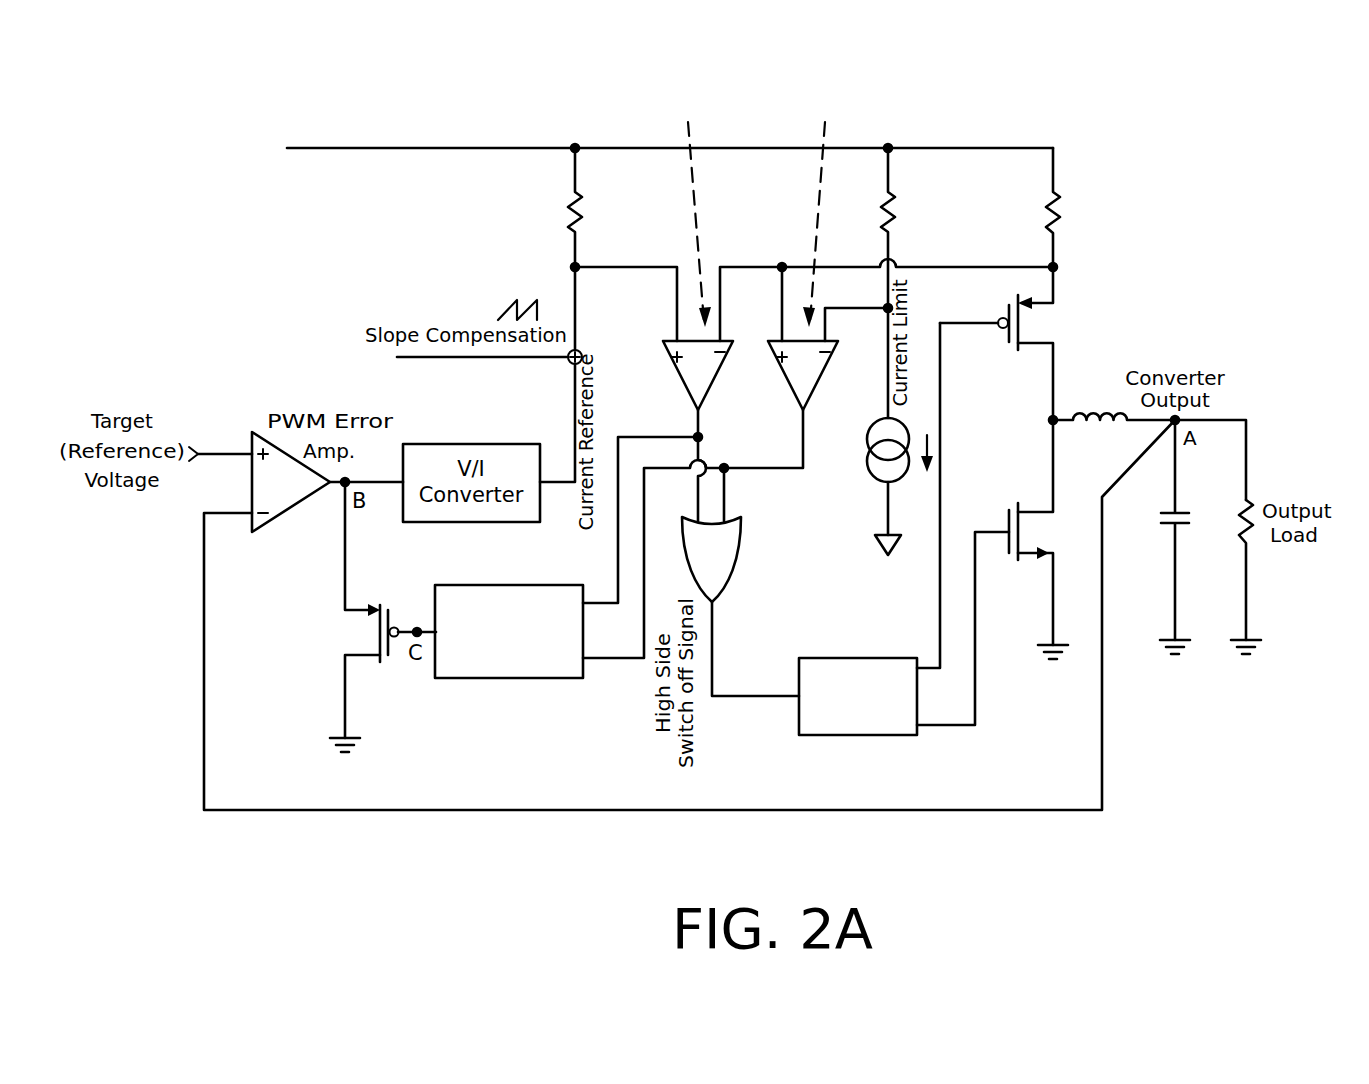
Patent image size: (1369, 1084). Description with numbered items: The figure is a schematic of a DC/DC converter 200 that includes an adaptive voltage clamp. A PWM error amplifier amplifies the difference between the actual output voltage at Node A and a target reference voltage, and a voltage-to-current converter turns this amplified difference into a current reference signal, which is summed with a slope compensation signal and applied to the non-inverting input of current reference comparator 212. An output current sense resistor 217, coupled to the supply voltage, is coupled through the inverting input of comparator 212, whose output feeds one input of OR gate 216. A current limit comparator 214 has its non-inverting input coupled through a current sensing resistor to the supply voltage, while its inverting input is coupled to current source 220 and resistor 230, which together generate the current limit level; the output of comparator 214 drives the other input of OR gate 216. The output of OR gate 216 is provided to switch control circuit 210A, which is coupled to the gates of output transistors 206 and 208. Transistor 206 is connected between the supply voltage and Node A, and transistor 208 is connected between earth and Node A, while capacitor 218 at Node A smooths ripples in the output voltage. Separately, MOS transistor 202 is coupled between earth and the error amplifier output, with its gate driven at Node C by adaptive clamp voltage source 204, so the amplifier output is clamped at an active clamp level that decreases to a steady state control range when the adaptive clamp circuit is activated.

The converter 200 is at (1141, 97).
The MOS transistor 202 is at (378, 622).
The adaptive clamp voltage source 204 is at (480, 678).
The MOS transistor 206 is at (1025, 322).
The MOS transistor 208 is at (1005, 522).
The switch control circuit 210A is at (860, 735).
The current reference comparator 212 is at (713, 380).
The current limit comparator 214 is at (818, 380).
The OR gate 216 is at (736, 560).
The output current sense resistor 217 is at (1062, 207).
The capacitor 218 is at (1170, 536).
The current source 220 is at (868, 476).
The resistor 230 is at (896, 200).